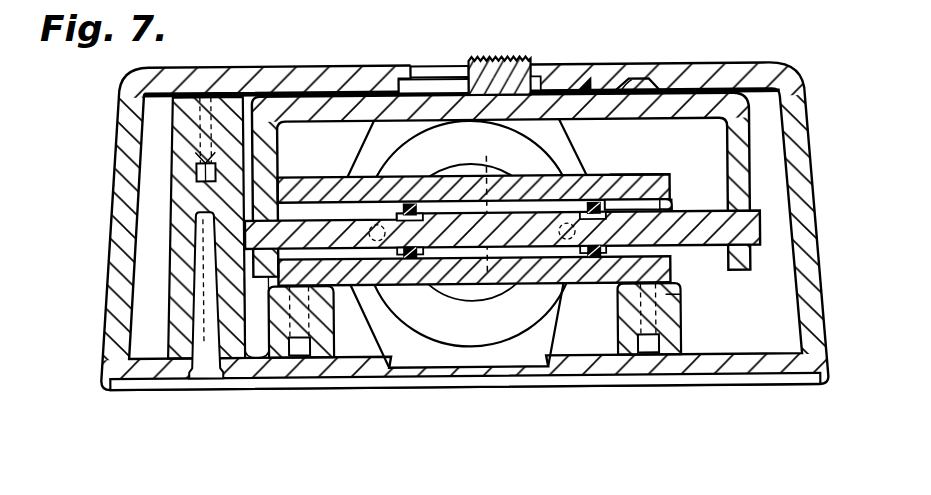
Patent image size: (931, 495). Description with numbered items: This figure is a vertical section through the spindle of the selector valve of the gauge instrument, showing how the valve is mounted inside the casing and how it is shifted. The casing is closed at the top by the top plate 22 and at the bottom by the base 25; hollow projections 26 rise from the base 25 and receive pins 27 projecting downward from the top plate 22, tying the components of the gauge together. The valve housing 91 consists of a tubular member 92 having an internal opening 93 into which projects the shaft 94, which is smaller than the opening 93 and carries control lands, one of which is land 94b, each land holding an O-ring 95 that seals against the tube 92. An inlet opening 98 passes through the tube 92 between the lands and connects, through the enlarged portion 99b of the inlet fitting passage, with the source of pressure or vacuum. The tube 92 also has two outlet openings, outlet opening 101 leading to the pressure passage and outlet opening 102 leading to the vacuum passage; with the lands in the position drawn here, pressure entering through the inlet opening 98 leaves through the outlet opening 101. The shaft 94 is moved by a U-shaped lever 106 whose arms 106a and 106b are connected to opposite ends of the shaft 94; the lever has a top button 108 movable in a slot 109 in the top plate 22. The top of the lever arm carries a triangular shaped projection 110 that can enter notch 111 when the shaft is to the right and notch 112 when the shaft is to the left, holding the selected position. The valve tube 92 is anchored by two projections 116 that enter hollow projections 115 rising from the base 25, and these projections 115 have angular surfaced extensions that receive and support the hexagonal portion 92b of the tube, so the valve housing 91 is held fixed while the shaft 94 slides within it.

The top plate 22 is at (350, 67).
The base 25 is at (775, 386).
The hollow projections 26 is at (176, 265).
The pins 27 is at (204, 157).
The valve housing 91 is at (644, 175).
The tubular member 92 is at (617, 176).
The hexagonal portion 92b is at (676, 303).
The internal opening 93 is at (672, 205).
The shaft 94 is at (700, 236).
The control land 94b is at (430, 258).
The O-ring 95 is at (415, 258).
The inlet opening 98 is at (489, 160).
The enlarged portion 99b is at (473, 178).
The outlet opening 101 is at (538, 297).
The outlet opening 102 is at (342, 187).
The U-shaped lever 106 is at (710, 103).
The lever arm 106a is at (753, 154).
The lever arm 106b is at (248, 133).
The top button 108 is at (491, 55).
The slot 109 is at (461, 72).
The triangular shaped projection 110 is at (648, 84).
The notch 111 is at (636, 90).
The notch 112 is at (587, 86).
The hollow projection 115 is at (275, 345).
The projections 116 is at (300, 356).